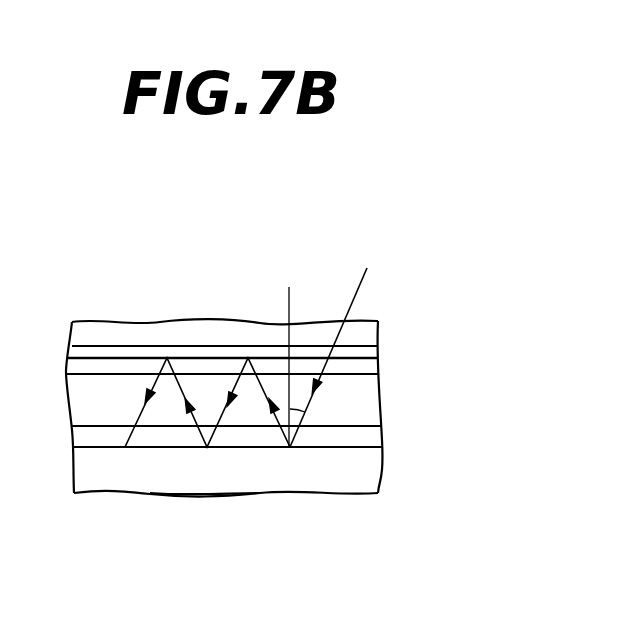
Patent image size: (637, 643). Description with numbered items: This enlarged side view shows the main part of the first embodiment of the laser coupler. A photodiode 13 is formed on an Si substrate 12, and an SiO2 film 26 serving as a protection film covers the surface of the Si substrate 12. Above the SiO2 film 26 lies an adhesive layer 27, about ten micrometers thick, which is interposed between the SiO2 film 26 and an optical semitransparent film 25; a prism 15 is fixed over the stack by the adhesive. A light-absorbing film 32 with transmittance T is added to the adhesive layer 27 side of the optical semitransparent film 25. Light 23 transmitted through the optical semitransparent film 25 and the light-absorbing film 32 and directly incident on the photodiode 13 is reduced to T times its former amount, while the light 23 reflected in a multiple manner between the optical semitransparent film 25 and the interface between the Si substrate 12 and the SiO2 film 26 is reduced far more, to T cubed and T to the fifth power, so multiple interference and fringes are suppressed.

The Si substrate 12 is at (382, 472).
The photodiode 13 is at (218, 499).
The prism 15 is at (130, 332).
The light 23 is at (366, 283).
The optical semitransparent film 25 is at (378, 347).
The SiO2 film 26 is at (370, 437).
The adhesive layer 27 is at (362, 402).
The light-absorbing film 32 is at (367, 367).